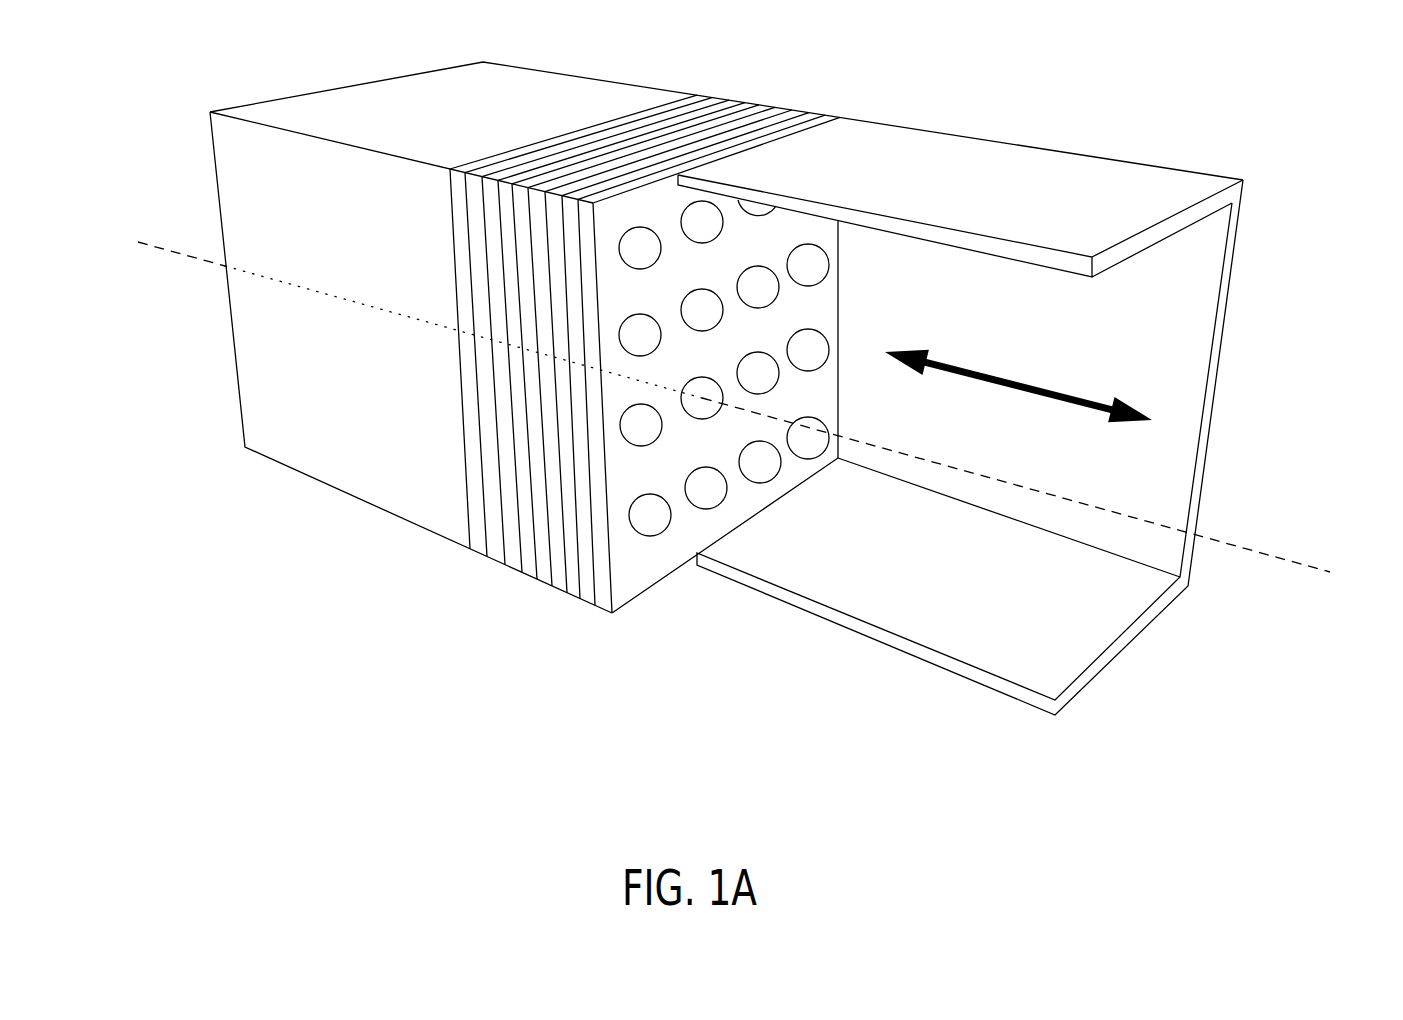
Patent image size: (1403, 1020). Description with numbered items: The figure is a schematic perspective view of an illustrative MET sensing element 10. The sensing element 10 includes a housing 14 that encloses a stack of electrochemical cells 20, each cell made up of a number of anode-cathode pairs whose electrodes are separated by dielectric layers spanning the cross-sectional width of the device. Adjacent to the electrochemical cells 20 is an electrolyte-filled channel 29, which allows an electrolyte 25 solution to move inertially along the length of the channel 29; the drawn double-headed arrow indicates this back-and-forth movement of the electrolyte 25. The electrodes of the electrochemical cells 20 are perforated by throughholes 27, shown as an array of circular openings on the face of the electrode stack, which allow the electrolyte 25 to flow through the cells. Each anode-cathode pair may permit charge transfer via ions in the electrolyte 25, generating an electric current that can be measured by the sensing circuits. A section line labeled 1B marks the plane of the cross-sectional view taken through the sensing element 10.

The MET sensing element 10 is at (228, 689).
The housing 14 is at (957, 172).
The electrochemical cells 20 is at (805, 88).
The electrolyte 25 is at (1035, 417).
The throughholes 27 is at (760, 462).
The electrolyte-filled channel 29 is at (1262, 416).
The section line 1B is at (737, 410).